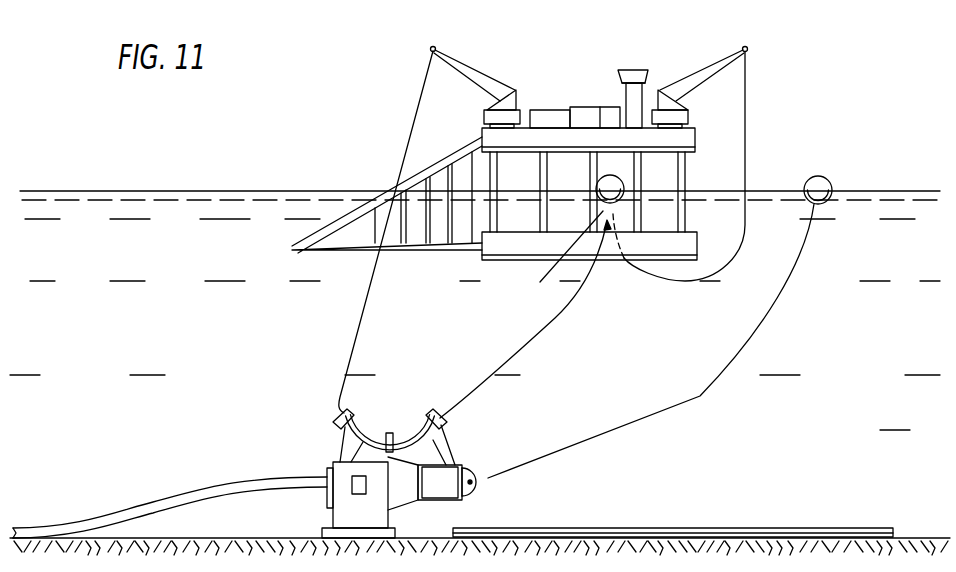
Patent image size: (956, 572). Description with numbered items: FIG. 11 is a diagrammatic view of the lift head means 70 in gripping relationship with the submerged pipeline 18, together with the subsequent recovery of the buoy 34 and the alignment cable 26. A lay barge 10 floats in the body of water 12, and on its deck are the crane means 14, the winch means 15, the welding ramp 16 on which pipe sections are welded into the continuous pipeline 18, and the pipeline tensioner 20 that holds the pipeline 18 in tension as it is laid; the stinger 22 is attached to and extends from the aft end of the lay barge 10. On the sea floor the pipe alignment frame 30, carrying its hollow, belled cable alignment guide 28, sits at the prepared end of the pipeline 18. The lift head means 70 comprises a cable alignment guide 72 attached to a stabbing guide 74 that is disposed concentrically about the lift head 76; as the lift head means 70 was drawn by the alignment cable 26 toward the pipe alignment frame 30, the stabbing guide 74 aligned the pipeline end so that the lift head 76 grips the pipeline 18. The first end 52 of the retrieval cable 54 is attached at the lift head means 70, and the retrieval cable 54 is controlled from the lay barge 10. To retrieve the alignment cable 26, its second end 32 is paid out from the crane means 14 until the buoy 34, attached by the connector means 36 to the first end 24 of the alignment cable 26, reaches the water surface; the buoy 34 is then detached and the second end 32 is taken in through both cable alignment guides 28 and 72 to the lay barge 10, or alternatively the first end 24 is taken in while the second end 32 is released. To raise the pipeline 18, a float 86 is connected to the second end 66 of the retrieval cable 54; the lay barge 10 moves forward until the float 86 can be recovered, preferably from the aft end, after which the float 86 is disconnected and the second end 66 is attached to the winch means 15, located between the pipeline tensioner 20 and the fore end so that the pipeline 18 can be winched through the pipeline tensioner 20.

The lay barge 10 is at (637, 66).
The body of water 12 is at (164, 186).
The crane means 14 is at (461, 63).
The winch means 15 is at (606, 107).
The welding ramp 16 is at (548, 108).
The pipeline 18 is at (155, 504).
The pipeline tensioner 20 is at (585, 107).
The stinger 22 is at (435, 253).
The first end of the alignment cable 24 is at (602, 229).
The alignment cable 26 is at (356, 319).
The cable alignment guide 28 is at (336, 424).
The pipe alignment frame 30 is at (327, 508).
The second end of the alignment cable 32 is at (521, 85).
The buoy 34 is at (626, 200).
The connector means 36 is at (556, 258).
The first end of the retrieval cable 52 is at (481, 492).
The retrieval cable 54 is at (654, 418).
The second end of the retrieval cable 66 is at (667, 88).
The lift head means 70 is at (450, 440).
The cable alignment guide 72 is at (409, 418).
The stabbing guide 74 is at (443, 501).
The lift head 76 is at (485, 469).
The float 86 is at (826, 178).